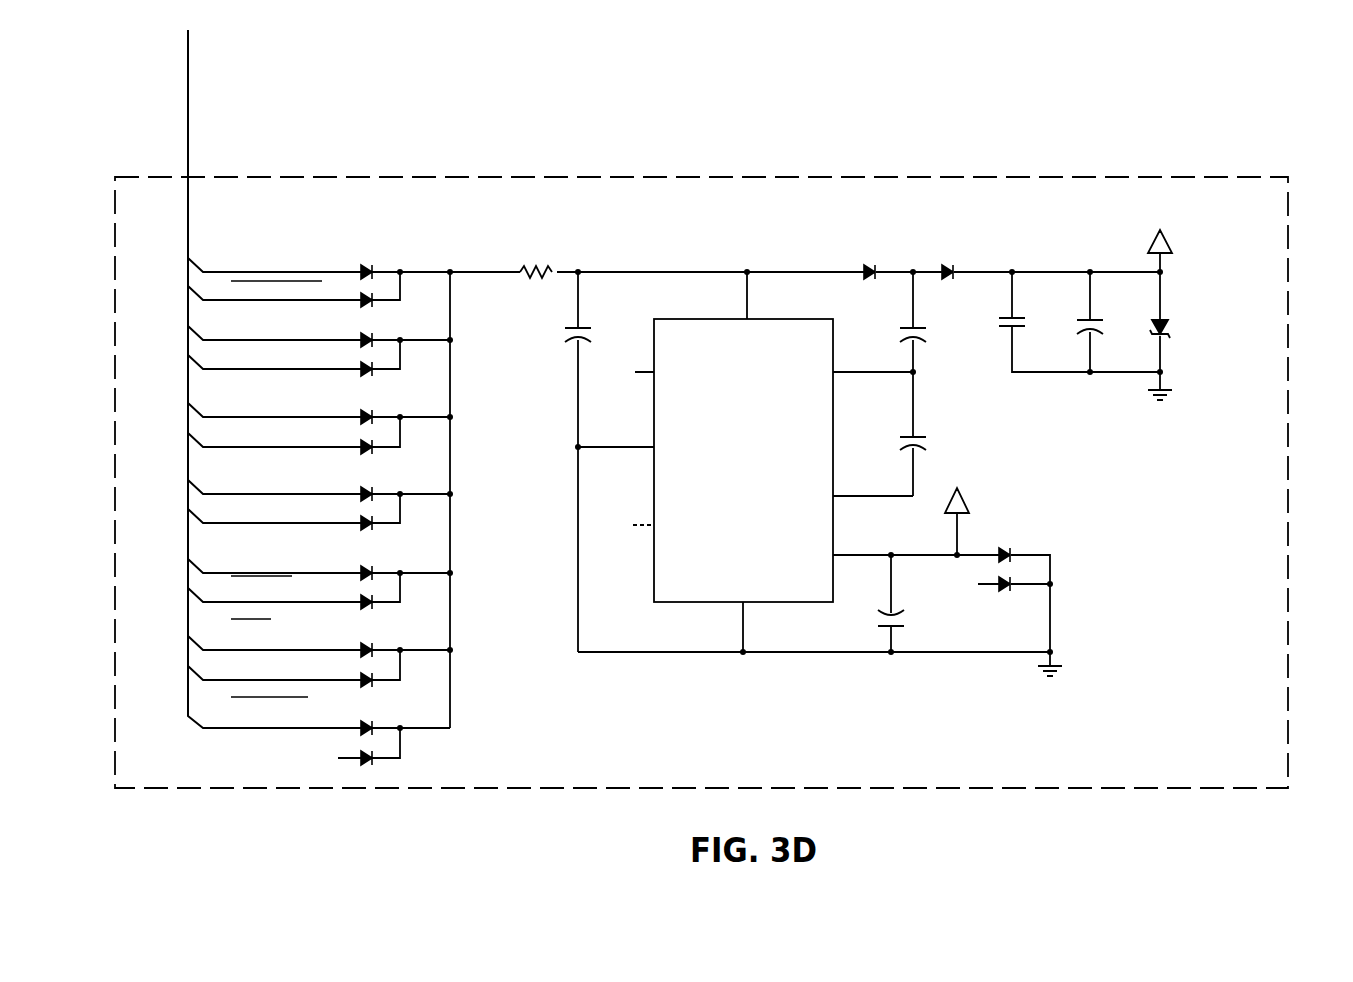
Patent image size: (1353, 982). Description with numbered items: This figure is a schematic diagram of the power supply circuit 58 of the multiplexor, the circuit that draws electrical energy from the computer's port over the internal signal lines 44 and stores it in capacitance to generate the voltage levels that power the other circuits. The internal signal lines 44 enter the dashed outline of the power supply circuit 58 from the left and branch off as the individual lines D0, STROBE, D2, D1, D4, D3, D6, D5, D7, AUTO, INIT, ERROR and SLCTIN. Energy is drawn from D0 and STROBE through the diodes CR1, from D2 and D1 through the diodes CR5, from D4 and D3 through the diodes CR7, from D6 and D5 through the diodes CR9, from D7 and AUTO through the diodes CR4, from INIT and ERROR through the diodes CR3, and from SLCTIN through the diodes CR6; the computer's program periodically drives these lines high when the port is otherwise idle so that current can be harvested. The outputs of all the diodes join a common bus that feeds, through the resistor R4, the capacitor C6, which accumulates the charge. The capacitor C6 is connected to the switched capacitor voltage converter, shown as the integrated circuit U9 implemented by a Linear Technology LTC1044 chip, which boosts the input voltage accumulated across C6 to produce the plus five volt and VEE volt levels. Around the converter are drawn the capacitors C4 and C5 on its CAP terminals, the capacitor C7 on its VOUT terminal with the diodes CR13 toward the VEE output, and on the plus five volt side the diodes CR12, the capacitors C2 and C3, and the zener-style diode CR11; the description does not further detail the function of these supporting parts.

The internal signal lines 44 is at (188, 116).
The power supply circuit 58 is at (1218, 177).
The diodes CR1 is at (407, 275).
The diodes CR5 is at (407, 344).
The diodes CR7 is at (407, 422).
The diodes CR9 is at (407, 498).
The diodes CR4 is at (407, 577).
The diodes CR3 is at (407, 654).
The diodes CR6 is at (394, 733).
The resistor R4 is at (538, 257).
The capacitor C6 is at (565, 319).
The integrated circuit U9 is at (743, 450).
The diode pair CR12 is at (908, 256).
The capacitor C4 is at (903, 326).
The capacitor C5 is at (903, 427).
The capacitor C7 is at (877, 612).
The diode pair CR13 is at (1036, 556).
The capacitor C2 is at (998, 306).
The capacitor C3 is at (1079, 310).
The zener diode CR11 is at (1189, 313).